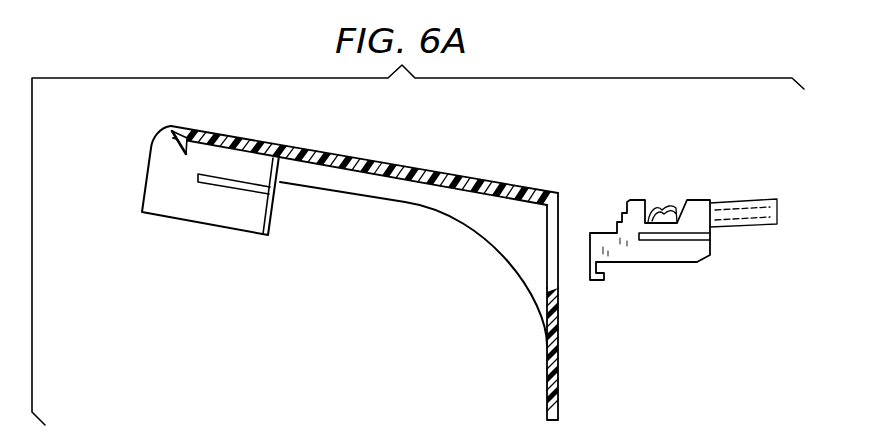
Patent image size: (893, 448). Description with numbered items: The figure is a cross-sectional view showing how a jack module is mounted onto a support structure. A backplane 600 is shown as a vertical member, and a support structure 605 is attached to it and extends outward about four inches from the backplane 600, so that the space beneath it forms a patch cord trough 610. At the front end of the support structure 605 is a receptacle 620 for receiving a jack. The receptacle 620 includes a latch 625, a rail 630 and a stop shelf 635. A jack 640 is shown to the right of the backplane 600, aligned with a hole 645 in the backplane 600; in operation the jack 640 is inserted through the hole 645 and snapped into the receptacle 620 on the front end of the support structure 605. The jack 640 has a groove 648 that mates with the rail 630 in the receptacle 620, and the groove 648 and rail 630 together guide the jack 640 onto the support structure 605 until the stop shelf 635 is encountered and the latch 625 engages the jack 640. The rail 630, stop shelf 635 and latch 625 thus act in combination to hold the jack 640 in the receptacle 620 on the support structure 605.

The backplane 600 is at (560, 333).
The support structure 605 is at (424, 182).
The patch cord trough 610 is at (463, 278).
The receptacle 620 is at (200, 212).
The latch 625 is at (188, 141).
The rail 630 is at (202, 183).
The stop shelf 635 is at (258, 212).
The jack 640 is at (710, 257).
The hole 645 is at (561, 223).
The groove 648 is at (669, 242).